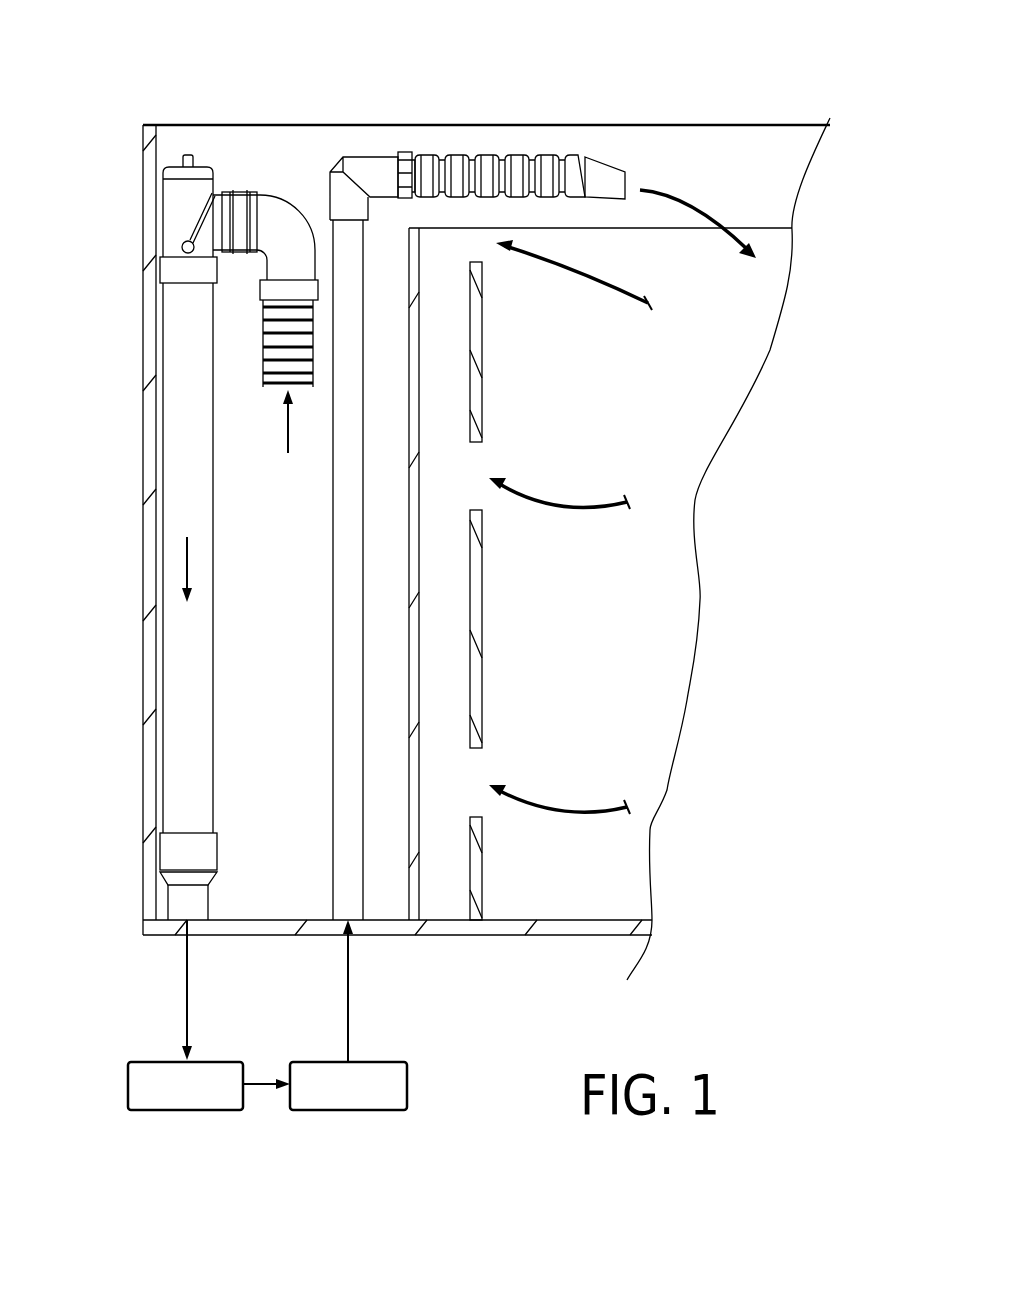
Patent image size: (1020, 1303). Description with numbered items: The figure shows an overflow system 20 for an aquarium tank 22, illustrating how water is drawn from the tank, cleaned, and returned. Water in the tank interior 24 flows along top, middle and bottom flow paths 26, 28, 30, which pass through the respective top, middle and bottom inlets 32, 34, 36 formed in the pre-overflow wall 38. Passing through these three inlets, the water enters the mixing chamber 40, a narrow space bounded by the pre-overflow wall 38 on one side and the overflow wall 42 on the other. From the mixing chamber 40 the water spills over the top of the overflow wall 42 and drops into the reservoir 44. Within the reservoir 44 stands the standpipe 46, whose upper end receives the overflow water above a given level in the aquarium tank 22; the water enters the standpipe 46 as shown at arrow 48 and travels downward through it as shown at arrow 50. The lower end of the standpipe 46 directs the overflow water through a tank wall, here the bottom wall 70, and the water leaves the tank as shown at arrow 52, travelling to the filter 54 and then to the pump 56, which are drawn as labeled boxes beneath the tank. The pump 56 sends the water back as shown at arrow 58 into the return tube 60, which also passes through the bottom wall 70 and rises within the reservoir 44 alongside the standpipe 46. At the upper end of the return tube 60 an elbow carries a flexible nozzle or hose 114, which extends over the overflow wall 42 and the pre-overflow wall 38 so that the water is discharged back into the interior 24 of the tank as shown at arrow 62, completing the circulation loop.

The overflow system 20 is at (343, 108).
The aquarium tank 22 is at (152, 131).
The tank interior 24 is at (620, 572).
The top flow path 26 is at (640, 293).
The middle flow path 28 is at (612, 497).
The bottom flow path 30 is at (613, 807).
The top inlet 32 is at (480, 252).
The middle inlet 34 is at (480, 450).
The bottom inlet 36 is at (478, 772).
The pre-overflow wall 38 is at (482, 615).
The mixing chamber 40 is at (452, 567).
The overflow wall 42 is at (400, 290).
The reservoir 44 is at (255, 742).
The standpipe 46 is at (207, 668).
The arrow 48 is at (290, 433).
The arrow 50 is at (190, 558).
The arrow 52 is at (183, 982).
The filter 54 is at (185, 1110).
The pump 56 is at (345, 1110).
The arrow 58 is at (350, 1000).
The return tube 60 is at (337, 887).
The arrow 62 is at (693, 208).
The bottom wall 70 is at (600, 920).
The flexible nozzle or hose 114 is at (493, 157).